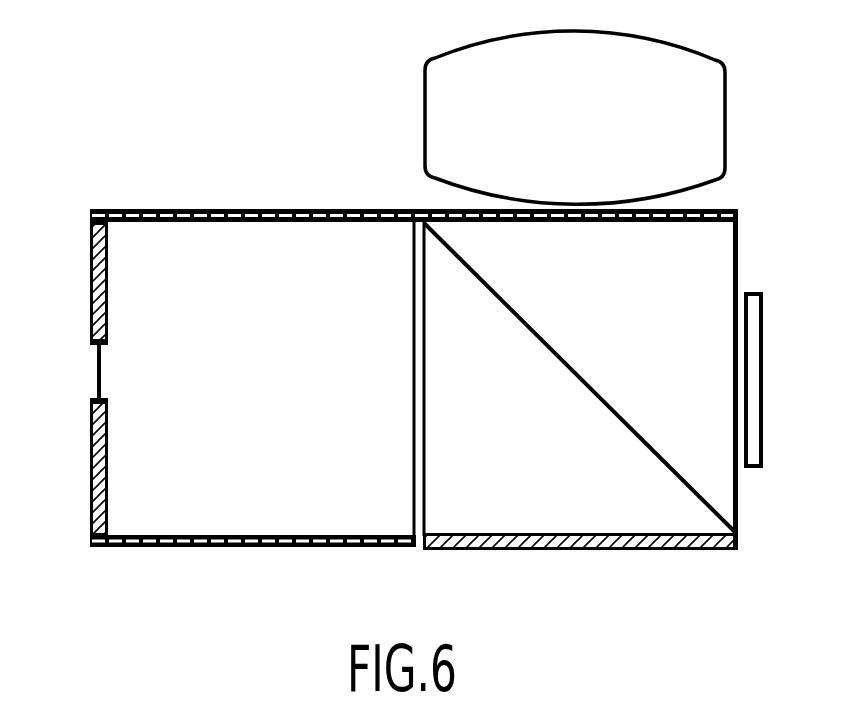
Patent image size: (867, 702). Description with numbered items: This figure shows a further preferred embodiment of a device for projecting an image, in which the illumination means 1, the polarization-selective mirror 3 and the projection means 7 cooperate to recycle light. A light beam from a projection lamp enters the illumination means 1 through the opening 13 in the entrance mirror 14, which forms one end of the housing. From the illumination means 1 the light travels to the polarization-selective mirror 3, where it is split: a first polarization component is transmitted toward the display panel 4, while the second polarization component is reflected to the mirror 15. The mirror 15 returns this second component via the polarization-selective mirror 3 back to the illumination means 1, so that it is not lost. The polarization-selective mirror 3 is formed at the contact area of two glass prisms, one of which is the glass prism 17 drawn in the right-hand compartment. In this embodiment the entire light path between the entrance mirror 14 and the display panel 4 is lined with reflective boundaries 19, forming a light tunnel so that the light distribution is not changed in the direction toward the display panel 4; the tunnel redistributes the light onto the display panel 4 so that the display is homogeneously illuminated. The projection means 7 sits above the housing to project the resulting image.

The illumination means 1 is at (159, 207).
The polarization-selective mirror 3 is at (540, 312).
The display panel 4 is at (752, 379).
The projection means 7 is at (423, 85).
The opening 13 is at (98, 373).
The entrance mirror 14 is at (116, 490).
The mirror 15 is at (530, 540).
The glass prism 17 is at (622, 500).
The reflective boundaries 19 is at (234, 526).